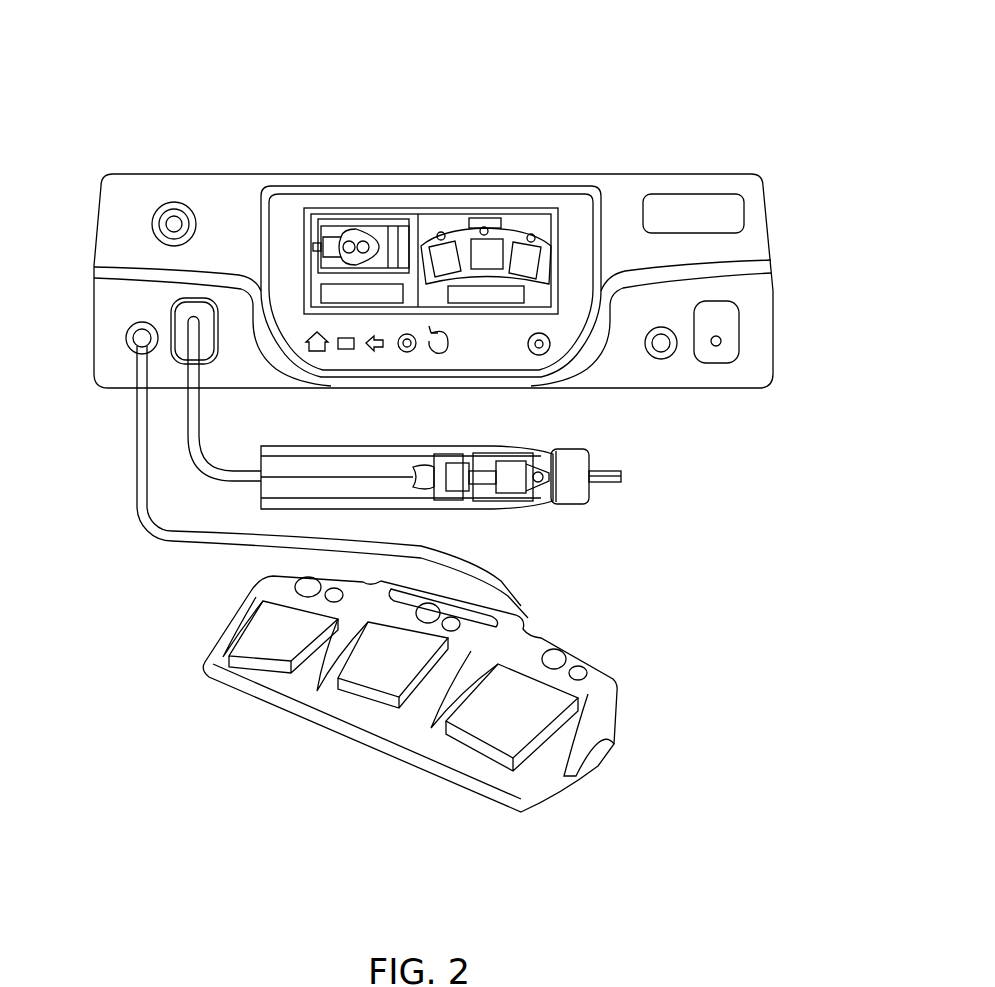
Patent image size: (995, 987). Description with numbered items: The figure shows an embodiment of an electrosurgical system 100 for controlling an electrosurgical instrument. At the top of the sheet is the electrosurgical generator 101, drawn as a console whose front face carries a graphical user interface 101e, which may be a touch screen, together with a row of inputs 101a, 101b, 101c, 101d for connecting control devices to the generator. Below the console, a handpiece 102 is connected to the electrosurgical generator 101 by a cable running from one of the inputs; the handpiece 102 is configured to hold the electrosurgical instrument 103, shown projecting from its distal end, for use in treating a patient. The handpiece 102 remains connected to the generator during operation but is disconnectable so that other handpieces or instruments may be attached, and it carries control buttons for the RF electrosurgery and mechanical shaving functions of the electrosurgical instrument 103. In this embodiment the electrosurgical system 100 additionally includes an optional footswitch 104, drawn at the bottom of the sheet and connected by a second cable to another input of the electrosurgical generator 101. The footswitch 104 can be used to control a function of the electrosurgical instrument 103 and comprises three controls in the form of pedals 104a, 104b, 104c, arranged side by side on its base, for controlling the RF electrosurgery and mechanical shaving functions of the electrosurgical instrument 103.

The electrosurgical system 100 is at (814, 89).
The electrosurgical generator 101 is at (685, 213).
The input 101a is at (140, 350).
The input 101b is at (203, 333).
The input 101c is at (660, 358).
The input 101d is at (722, 348).
The graphical user interface 101e is at (403, 207).
The handpiece 102 is at (317, 467).
The electrosurgical instrument 103 is at (600, 486).
The footswitch 104 is at (547, 757).
The pedal 104a is at (265, 668).
The pedal 104b is at (370, 696).
The pedal 104c is at (477, 738).